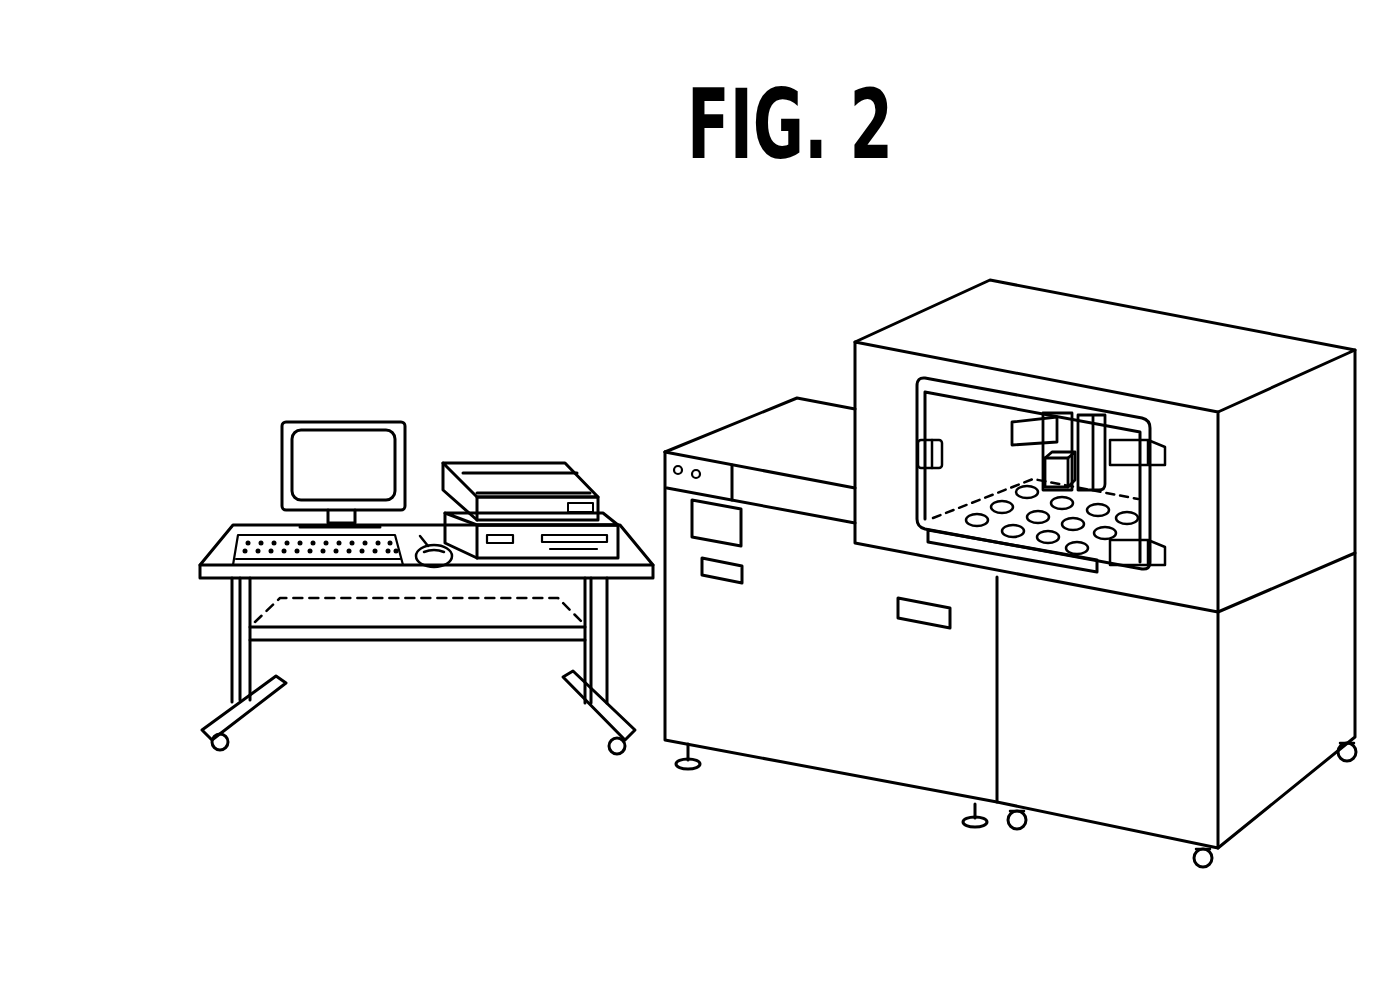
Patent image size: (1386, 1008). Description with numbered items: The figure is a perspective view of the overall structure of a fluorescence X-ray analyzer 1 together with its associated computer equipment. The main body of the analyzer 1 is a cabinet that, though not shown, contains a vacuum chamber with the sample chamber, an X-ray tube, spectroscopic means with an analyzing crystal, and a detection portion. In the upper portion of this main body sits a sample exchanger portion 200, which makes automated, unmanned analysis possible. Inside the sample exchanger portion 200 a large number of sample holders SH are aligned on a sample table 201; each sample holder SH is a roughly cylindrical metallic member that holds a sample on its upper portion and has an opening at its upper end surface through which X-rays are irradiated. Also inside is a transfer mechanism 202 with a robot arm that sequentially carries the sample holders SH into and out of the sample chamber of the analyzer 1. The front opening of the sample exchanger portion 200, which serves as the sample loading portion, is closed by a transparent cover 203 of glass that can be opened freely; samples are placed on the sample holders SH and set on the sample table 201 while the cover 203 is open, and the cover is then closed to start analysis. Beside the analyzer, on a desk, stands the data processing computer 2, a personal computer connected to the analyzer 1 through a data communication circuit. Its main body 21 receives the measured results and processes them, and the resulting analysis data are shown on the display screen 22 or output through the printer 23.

The fluorescence X-ray analyzer 1 is at (1010, 521).
The data processing computer 2 is at (426, 520).
The main body 21 is at (613, 512).
The display screen 22 is at (338, 420).
The printer 23 is at (492, 460).
The sample exchanger portion 200 is at (1068, 434).
The sample table 201 is at (940, 527).
The transfer mechanism 202 is at (1085, 400).
The transparent cover 203 is at (963, 404).
The sample holder SH is at (1088, 552).